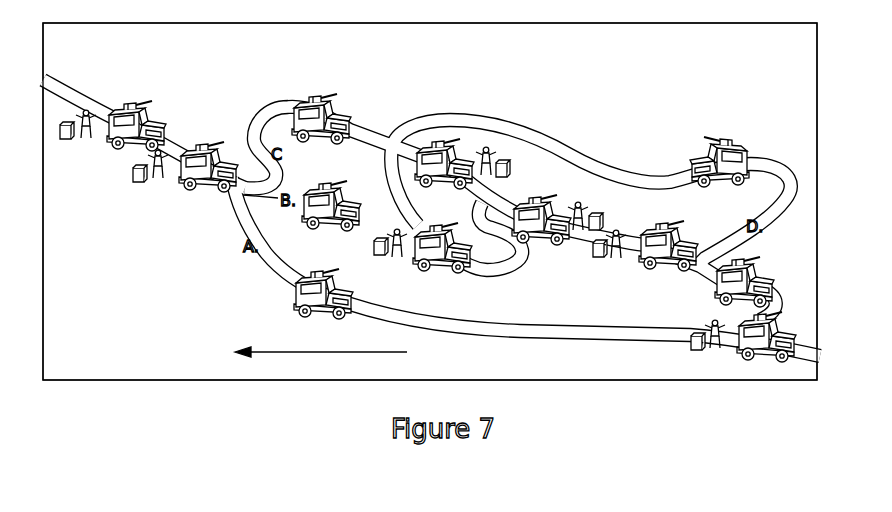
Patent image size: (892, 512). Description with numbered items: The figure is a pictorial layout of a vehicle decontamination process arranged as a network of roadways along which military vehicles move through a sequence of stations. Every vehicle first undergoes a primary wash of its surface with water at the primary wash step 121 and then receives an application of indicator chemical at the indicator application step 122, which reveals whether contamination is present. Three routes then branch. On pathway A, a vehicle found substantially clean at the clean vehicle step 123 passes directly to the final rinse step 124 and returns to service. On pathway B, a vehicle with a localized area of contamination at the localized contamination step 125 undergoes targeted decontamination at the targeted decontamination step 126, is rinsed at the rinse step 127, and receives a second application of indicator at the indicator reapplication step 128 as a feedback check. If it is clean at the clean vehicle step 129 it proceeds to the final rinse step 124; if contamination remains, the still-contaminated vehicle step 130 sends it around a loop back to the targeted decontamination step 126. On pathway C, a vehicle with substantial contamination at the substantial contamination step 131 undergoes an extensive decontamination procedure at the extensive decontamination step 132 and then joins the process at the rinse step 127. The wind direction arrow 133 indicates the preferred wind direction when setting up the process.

The primary wash step 121 is at (127, 105).
The indicator application step 122 is at (205, 143).
The clean vehicle step of pathway A 123 is at (292, 288).
The final rinse step 124 is at (757, 352).
The localized contamination step of pathway B 125 is at (320, 217).
The targeted decontamination step 126 is at (427, 258).
The rinse step 127 is at (535, 243).
The indicator reapplication step 128 is at (643, 258).
The clean vehicle step after reapplication 129 is at (715, 283).
The still-contaminated vehicle step 130 is at (712, 142).
The substantial contamination step of pathway C 131 is at (318, 97).
The extensive decontamination step 132 is at (430, 177).
The wind direction arrow 133 is at (318, 350).